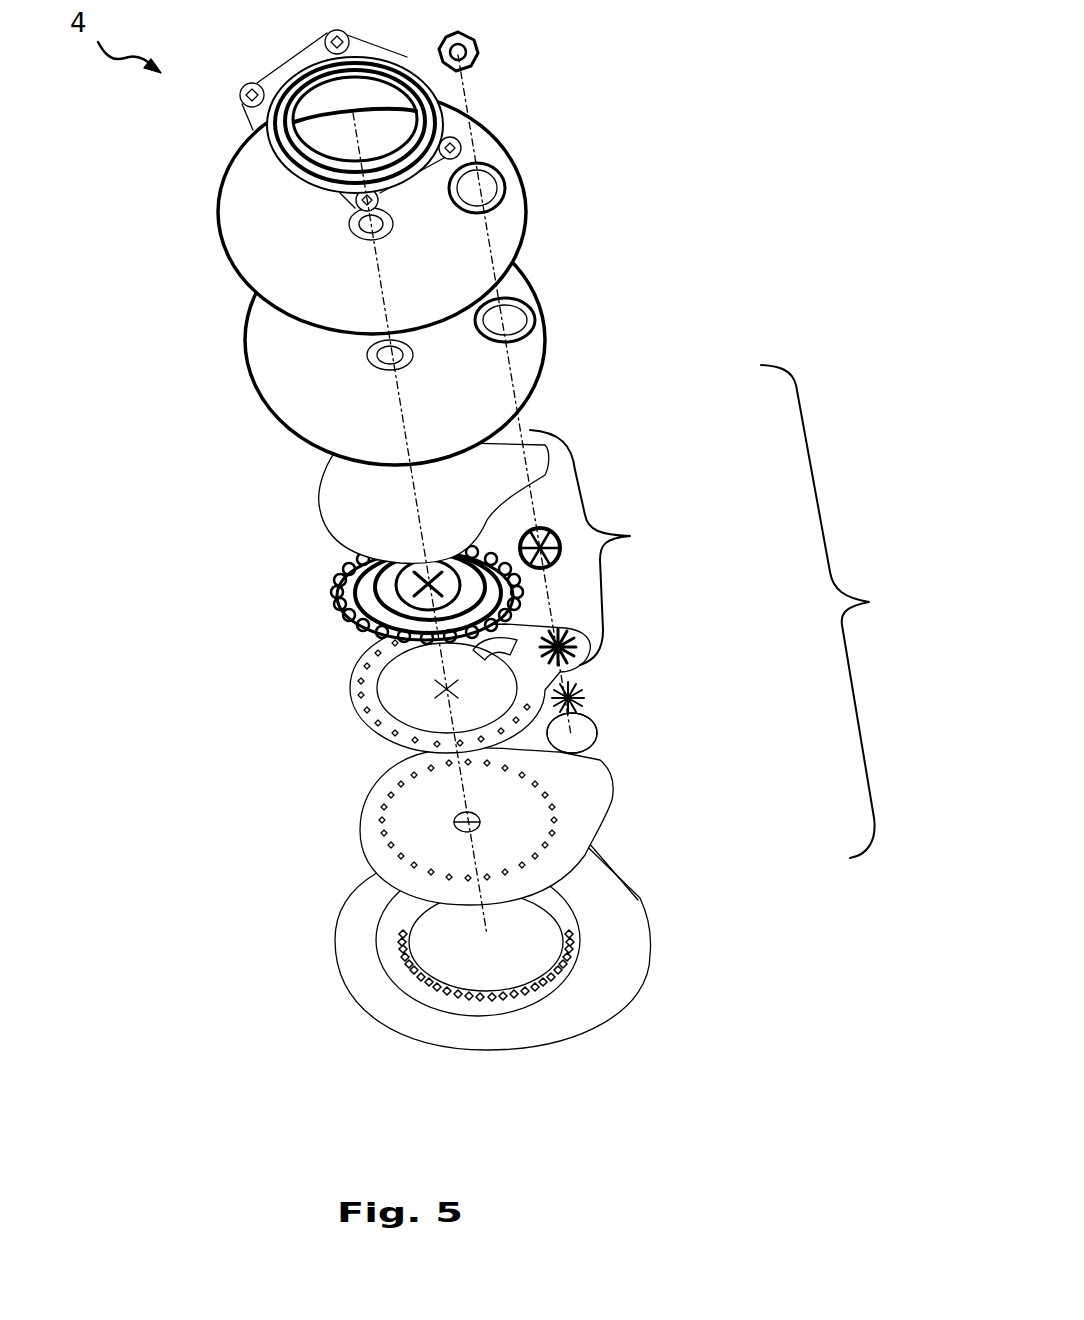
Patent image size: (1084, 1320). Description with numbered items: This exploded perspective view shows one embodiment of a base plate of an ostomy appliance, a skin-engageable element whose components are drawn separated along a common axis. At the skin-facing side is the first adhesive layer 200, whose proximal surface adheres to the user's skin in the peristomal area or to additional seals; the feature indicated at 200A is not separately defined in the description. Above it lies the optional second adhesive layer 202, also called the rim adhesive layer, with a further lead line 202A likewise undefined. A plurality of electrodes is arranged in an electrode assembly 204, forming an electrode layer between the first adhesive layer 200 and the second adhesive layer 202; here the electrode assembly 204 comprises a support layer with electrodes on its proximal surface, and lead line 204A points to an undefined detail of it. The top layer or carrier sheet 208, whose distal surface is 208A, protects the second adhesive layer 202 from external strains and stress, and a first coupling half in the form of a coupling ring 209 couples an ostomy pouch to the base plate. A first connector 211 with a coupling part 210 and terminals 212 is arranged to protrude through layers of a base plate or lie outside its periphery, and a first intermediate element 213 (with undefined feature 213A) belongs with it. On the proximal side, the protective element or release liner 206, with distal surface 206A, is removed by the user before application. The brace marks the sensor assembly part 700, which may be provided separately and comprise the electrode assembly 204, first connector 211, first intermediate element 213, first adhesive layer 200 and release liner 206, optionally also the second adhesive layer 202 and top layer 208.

The first adhesive layer 200 is at (580, 797).
The base plate aperture 200A is at (385, 796).
The second adhesive layer 202 is at (528, 352).
The second plate bolt hole 202A is at (281, 377).
The electrode assembly 204 is at (640, 537).
The gasket 204A is at (338, 507).
The release liner 206 is at (578, 963).
The distal surface of the release liner 206A is at (360, 927).
The carrier sheet 208 is at (503, 213).
The distal surface of the carrier sheet 208A is at (272, 246).
The coupling ring 209 is at (256, 111).
The coupling part of first connector 210 is at (478, 46).
The first connector 211 is at (458, 52).
The terminals of first connector 212 is at (580, 688).
The first intermediate element 213 is at (582, 733).
The washer face 213A is at (572, 733).
The sensor assembly part 700 is at (847, 611).